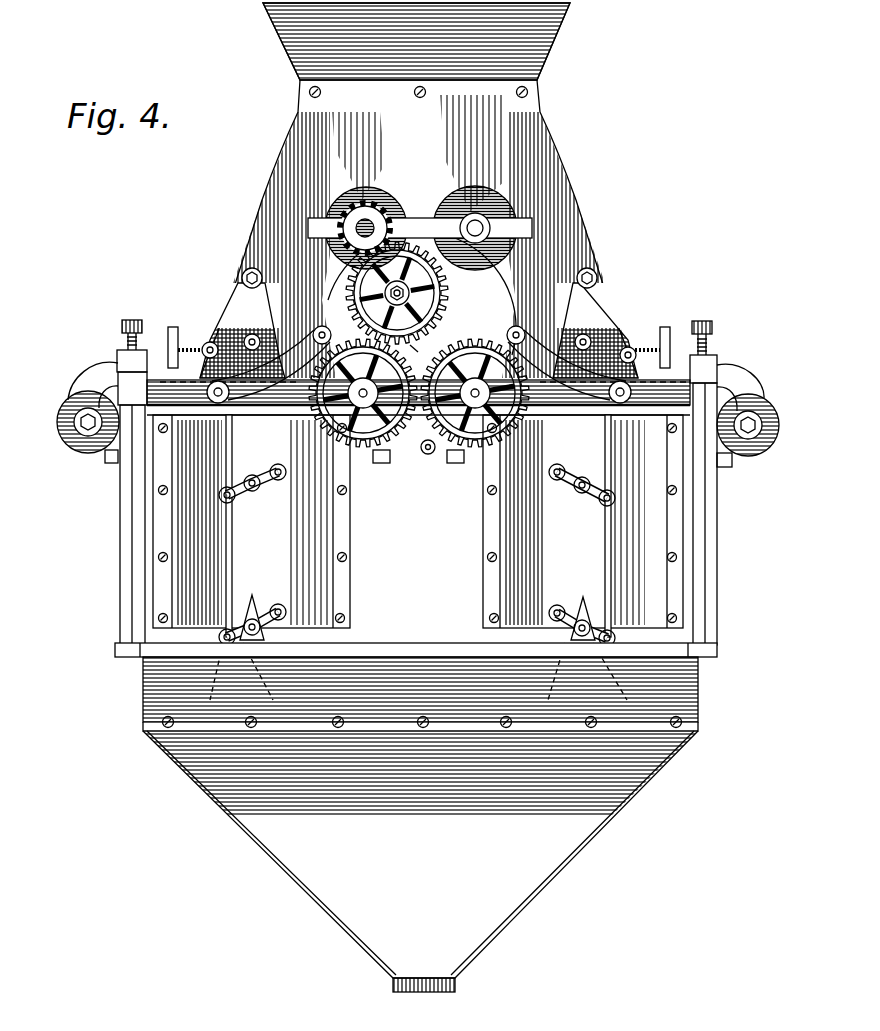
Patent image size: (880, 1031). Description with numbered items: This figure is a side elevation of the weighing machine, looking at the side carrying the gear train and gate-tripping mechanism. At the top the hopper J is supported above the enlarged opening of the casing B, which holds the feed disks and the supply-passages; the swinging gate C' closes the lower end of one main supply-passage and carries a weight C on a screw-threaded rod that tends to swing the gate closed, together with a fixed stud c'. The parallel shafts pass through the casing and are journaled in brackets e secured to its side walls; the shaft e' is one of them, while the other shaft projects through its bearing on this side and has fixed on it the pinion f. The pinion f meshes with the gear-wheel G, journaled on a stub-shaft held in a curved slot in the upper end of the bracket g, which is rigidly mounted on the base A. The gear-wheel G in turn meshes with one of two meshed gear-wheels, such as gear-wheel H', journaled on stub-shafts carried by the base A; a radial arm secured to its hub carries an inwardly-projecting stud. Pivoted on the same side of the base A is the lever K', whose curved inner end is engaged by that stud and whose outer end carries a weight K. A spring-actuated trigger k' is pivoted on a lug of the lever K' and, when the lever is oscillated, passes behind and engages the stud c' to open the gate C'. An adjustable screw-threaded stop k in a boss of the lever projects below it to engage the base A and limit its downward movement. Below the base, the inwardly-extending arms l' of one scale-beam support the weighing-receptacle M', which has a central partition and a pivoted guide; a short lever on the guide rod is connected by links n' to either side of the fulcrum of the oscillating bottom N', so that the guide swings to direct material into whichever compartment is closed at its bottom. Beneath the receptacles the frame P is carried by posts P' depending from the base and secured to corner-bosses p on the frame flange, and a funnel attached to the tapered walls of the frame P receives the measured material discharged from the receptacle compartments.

The hopper J is at (285, 28).
The casing B is at (256, 216).
The shaft e' is at (485, 223).
The bracket e is at (436, 228).
The pinion f is at (368, 214).
The gear-wheel G is at (349, 286).
The bracket g is at (413, 350).
The swinging gate C' is at (606, 321).
The stud c' is at (581, 329).
The weight C is at (413, 326).
The trigger k' is at (544, 404).
The screw-threaded stop k is at (414, 348).
The base A is at (128, 390).
The weight K is at (411, 421).
The lever K' is at (569, 388).
The arm l' is at (603, 479).
The gear-wheel H' is at (475, 380).
The weighing-receptacle M' is at (561, 521).
The link n' is at (585, 526).
The oscillating bottom N' is at (578, 648).
The post P' is at (410, 508).
The corner-boss p is at (115, 648).
The frame P is at (438, 694).